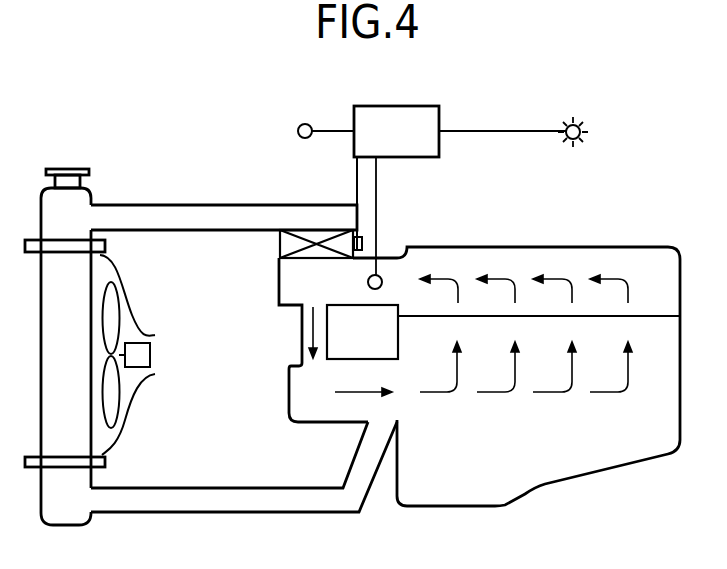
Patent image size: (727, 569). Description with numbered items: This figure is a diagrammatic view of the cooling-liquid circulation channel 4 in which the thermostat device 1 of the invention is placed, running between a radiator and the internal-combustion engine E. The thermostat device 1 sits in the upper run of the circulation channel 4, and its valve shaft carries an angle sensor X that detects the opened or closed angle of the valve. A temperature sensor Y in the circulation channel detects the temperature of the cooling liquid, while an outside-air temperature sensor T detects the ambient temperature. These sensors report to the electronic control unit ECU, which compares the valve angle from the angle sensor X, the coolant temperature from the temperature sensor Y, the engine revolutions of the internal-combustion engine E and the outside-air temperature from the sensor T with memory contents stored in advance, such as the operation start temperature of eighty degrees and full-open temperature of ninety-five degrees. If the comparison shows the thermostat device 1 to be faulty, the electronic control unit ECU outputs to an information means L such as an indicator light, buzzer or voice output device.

The circulation channel 4 is at (218, 215).
The thermostat device 1 is at (279, 246).
The electronic control unit ECU is at (391, 105).
The outside-air temperature sensor T is at (304, 123).
The information means L is at (580, 122).
The angle sensor X is at (363, 243).
The temperature sensor Y is at (378, 275).
The internal-combustion engine E is at (634, 247).